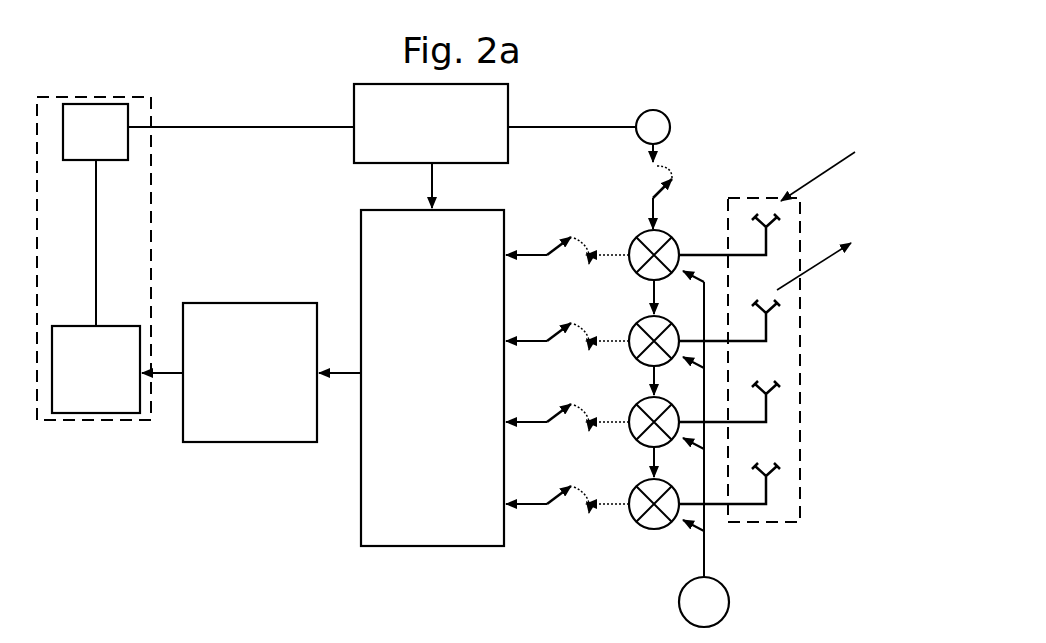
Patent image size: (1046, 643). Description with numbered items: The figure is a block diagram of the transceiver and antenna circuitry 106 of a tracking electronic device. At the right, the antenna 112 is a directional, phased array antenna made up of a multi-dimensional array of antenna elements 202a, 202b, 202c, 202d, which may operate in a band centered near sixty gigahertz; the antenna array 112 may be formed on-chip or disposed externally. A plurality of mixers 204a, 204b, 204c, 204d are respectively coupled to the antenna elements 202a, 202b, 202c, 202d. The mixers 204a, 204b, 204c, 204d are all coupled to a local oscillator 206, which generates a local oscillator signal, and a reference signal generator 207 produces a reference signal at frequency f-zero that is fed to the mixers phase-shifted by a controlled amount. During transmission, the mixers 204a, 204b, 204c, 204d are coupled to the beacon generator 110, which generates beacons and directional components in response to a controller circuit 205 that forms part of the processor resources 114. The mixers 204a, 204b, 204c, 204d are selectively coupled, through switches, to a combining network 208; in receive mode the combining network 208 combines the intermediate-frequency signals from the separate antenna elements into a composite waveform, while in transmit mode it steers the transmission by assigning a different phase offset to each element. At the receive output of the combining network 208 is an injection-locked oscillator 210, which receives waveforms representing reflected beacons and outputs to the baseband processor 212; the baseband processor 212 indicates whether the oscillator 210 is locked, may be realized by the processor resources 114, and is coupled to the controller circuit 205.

The transceiver and antenna circuitry 106 is at (210, 106).
The processor resources 114 is at (151, 225).
The controller circuit 205 is at (95, 132).
The baseband processor 212 is at (96, 369).
The injection-locked oscillator 210 is at (250, 372).
The beacon generator 110 is at (431, 123).
The combining network 208 is at (432, 378).
The reference signal generator 207 is at (670, 124).
The mixer 204a is at (630, 244).
The mixer 204b is at (630, 330).
The mixer 204c is at (630, 411).
The mixer 204d is at (630, 493).
The local oscillator 206 is at (679, 608).
The antenna 112 is at (801, 322).
The antenna element 202a is at (778, 218).
The antenna element 202b is at (778, 304).
The antenna element 202c is at (778, 385).
The antenna element 202d is at (778, 467).